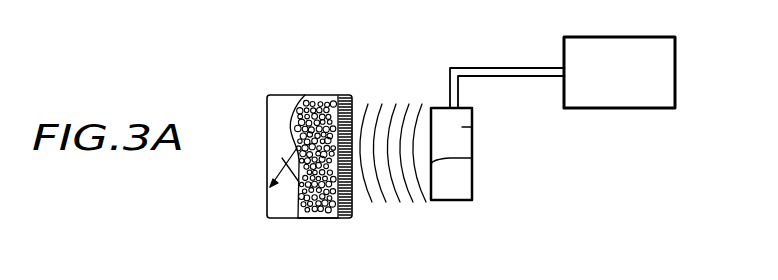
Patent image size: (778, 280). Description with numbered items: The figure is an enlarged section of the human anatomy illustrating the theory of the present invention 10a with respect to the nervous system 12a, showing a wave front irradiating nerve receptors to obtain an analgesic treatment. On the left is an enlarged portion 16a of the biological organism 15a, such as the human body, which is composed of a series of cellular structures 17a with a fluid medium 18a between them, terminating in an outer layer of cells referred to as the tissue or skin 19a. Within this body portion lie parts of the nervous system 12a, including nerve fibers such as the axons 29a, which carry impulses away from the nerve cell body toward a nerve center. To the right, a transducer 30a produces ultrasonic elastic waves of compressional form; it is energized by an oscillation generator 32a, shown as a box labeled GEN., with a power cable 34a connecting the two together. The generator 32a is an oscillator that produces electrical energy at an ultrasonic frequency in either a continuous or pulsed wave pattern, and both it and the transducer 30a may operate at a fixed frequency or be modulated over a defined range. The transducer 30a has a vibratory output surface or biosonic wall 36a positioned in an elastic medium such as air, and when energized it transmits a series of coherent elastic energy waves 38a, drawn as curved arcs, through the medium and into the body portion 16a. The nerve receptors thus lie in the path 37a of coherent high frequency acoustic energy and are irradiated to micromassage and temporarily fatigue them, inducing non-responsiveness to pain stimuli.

The present invention 10a is at (469, 207).
The nervous system 12a is at (296, 175).
The biological organism 15a is at (318, 95).
The enlarged portion of the biological organism 16a is at (281, 139).
The cellular structures 17a is at (326, 219).
The fluid medium 18a is at (314, 217).
The tissue or skin 19a is at (349, 208).
The axons 29a is at (282, 167).
The transducer 30a is at (472, 127).
The oscillation generator 32a is at (645, 40).
The power cable 34a is at (516, 64).
The vibratory output surface or biosonic wall 36a is at (472, 158).
The path of coherent high frequency acoustic energy 37a is at (431, 101).
The coherent elastic energy waves 38a is at (395, 197).